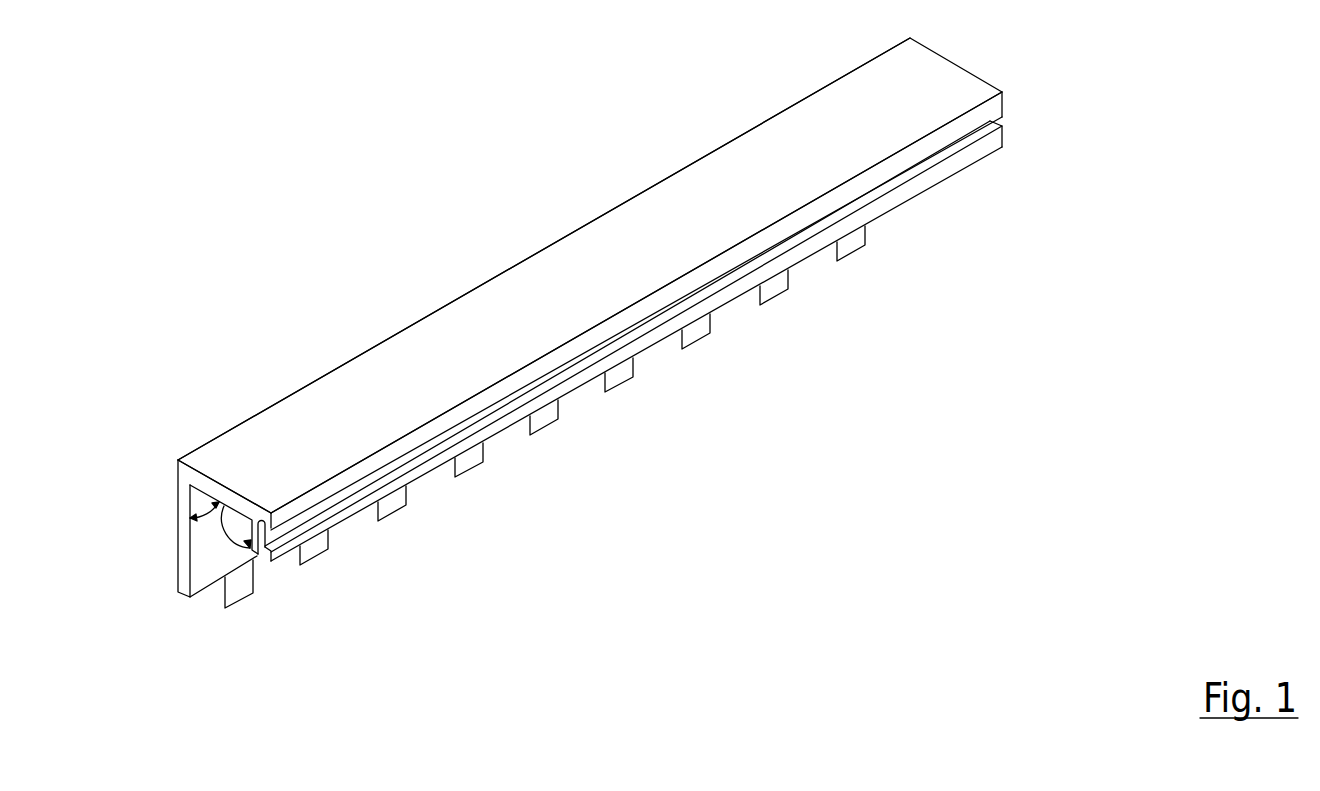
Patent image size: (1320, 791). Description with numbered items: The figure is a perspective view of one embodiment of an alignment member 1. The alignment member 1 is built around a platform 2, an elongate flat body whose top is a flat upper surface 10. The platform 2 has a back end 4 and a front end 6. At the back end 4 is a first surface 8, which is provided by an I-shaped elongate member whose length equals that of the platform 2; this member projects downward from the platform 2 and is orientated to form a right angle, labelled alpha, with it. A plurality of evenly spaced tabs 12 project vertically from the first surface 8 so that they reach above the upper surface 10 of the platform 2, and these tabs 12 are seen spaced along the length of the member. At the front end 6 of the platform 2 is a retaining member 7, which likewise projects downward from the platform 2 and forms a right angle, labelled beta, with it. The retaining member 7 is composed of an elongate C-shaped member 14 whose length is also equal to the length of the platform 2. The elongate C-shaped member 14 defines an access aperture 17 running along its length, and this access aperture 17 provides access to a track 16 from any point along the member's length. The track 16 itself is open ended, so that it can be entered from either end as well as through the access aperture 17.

The alignment member 1 is at (1030, 107).
The platform 2 is at (590, 275).
The back end 4 is at (205, 447).
The front end 6 is at (315, 492).
The retaining member 7 is at (470, 410).
The first surface 8 is at (178, 527).
The upper surface 10 is at (672, 255).
The tabs 12 is at (848, 250).
The elongate C shaped member 14 is at (283, 552).
The track 16 is at (261, 556).
The access aperture 17 is at (400, 464).